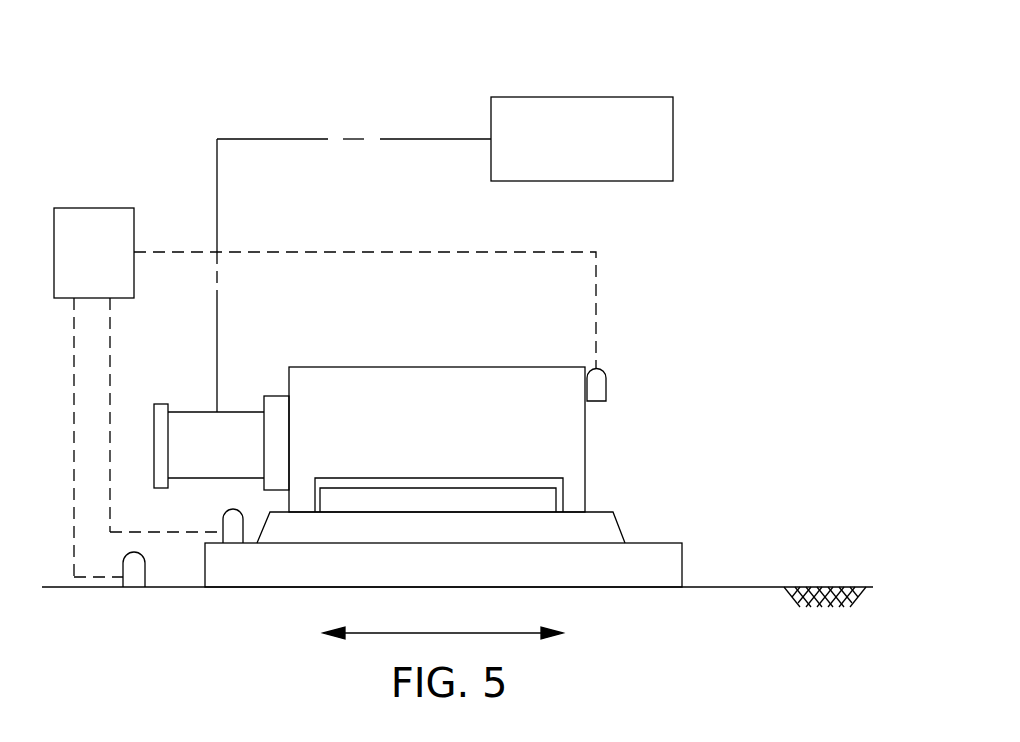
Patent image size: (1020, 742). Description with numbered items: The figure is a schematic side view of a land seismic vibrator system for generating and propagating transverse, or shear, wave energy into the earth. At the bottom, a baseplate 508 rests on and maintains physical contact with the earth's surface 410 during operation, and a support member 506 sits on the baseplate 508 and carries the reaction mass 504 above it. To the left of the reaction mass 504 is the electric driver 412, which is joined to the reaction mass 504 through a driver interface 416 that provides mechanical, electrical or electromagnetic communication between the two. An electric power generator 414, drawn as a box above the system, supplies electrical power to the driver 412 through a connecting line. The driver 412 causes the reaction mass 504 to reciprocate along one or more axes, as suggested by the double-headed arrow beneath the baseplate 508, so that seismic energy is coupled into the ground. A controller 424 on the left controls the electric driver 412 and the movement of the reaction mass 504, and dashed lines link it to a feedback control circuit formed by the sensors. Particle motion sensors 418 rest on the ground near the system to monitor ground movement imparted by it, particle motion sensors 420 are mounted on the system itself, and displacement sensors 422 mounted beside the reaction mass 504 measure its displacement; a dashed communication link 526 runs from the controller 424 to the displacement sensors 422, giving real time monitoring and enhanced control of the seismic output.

The earth's surface 410 is at (829, 587).
The electric driver 412 is at (207, 412).
The electric power generator 414 is at (565, 97).
The driver interface 416 is at (272, 395).
The particle motion sensors 418 is at (145, 575).
The particle motion sensors 420 is at (227, 513).
The displacement sensors 422 is at (606, 383).
The controller 424 is at (97, 208).
The reaction mass 504 is at (442, 367).
The support member 506 is at (617, 516).
The baseplate 508 is at (682, 555).
The communication link 526 is at (597, 280).